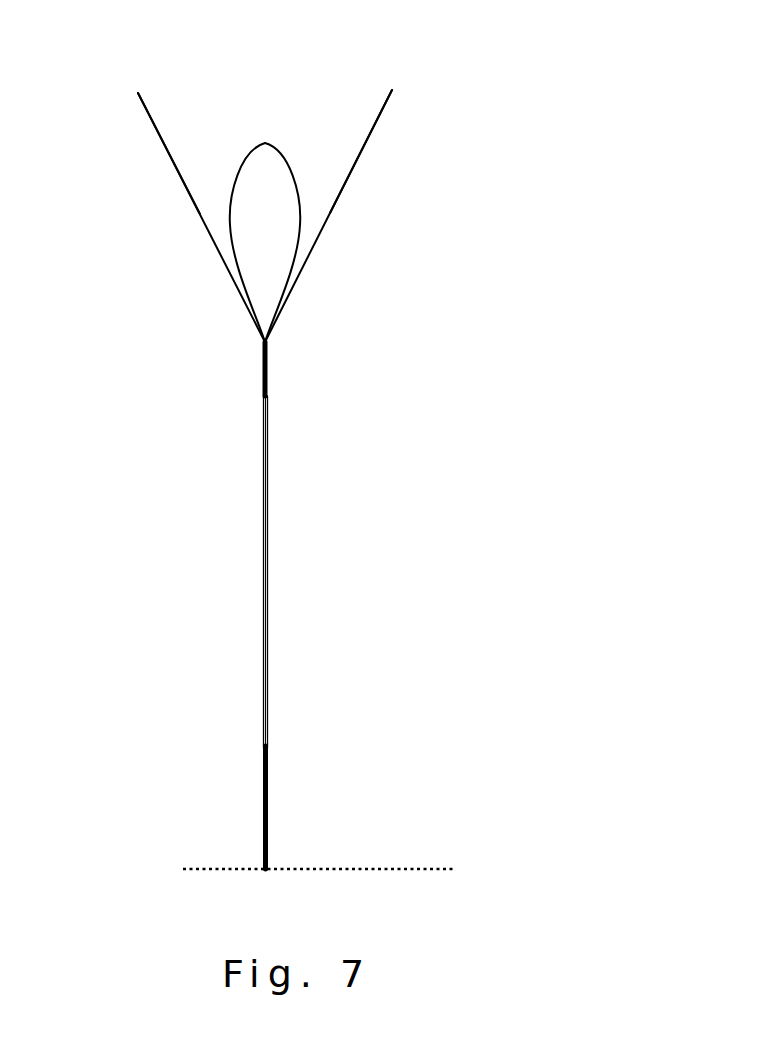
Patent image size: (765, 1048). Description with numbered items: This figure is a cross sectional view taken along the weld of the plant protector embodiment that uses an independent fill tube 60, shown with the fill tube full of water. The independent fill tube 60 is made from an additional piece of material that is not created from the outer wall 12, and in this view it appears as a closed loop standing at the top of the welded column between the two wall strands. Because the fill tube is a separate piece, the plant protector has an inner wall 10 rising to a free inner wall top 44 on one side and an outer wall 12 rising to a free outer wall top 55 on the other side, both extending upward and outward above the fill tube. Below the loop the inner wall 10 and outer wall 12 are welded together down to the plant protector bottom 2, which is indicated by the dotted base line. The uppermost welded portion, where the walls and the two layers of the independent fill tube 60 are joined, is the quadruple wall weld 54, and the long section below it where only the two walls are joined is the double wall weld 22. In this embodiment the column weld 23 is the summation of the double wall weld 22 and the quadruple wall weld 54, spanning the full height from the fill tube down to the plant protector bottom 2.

The plant protector bottom 2 is at (262, 872).
The inner wall 10 is at (182, 189).
The outer wall 12 is at (349, 189).
The double wall weld 22 is at (290, 397).
The column weld 23 is at (372, 343).
The inner wall top 44 is at (138, 93).
The quadruple wall weld 54 is at (290, 347).
The outer wall top 55 is at (392, 90).
The independent fill tube 60 is at (268, 142).